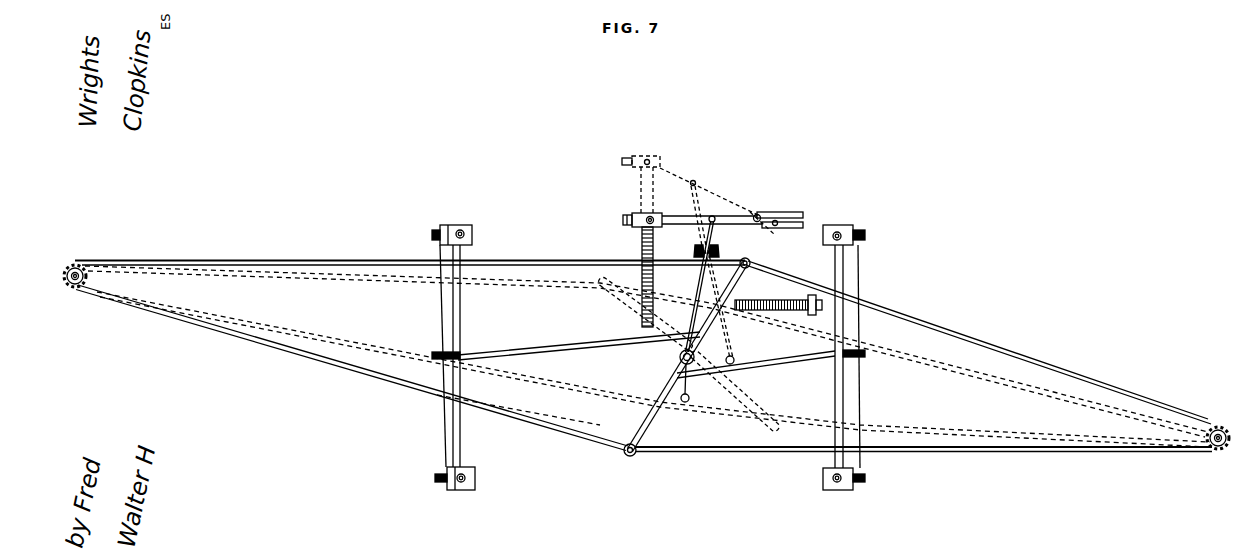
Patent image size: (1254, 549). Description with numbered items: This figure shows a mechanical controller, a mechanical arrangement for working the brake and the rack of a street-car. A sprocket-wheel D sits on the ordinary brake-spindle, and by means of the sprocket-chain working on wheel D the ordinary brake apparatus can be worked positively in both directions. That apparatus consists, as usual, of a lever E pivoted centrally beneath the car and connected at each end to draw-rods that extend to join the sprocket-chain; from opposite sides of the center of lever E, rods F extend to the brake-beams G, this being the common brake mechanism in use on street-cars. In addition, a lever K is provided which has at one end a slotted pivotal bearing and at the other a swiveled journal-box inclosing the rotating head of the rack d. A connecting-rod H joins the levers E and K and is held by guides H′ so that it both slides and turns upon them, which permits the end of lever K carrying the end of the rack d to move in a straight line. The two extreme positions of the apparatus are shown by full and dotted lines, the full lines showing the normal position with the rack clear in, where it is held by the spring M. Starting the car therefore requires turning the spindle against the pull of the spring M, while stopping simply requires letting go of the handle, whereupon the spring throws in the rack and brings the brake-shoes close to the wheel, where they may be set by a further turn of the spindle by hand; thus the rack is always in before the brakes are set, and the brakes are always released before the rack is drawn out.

The sprocket-wheel D is at (70, 290).
The brake-beam G is at (440, 331).
The rod F is at (546, 352).
The lever E is at (670, 400).
The connecting-rod H is at (712, 232).
The guide H′ is at (695, 251).
The lever K is at (776, 212).
The spring M is at (748, 301).
The rack d is at (650, 158).